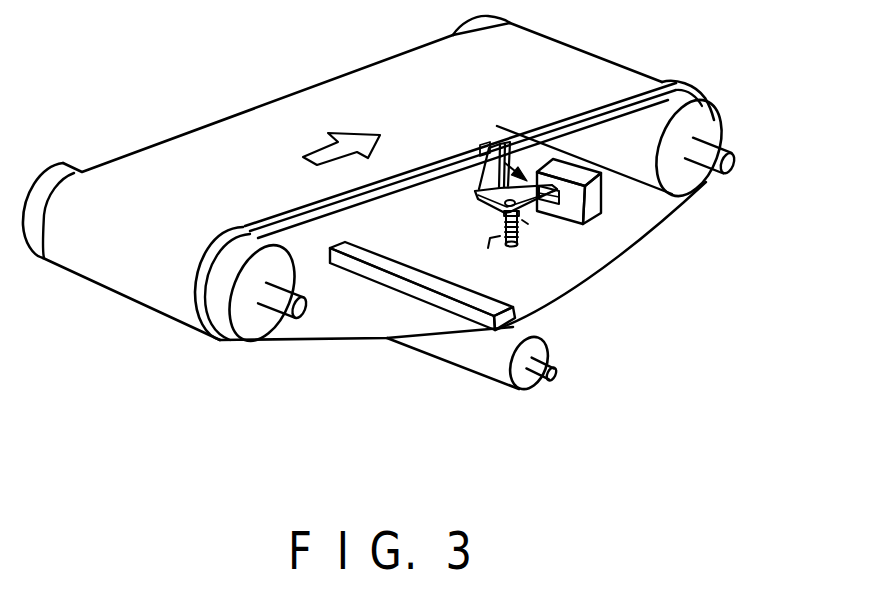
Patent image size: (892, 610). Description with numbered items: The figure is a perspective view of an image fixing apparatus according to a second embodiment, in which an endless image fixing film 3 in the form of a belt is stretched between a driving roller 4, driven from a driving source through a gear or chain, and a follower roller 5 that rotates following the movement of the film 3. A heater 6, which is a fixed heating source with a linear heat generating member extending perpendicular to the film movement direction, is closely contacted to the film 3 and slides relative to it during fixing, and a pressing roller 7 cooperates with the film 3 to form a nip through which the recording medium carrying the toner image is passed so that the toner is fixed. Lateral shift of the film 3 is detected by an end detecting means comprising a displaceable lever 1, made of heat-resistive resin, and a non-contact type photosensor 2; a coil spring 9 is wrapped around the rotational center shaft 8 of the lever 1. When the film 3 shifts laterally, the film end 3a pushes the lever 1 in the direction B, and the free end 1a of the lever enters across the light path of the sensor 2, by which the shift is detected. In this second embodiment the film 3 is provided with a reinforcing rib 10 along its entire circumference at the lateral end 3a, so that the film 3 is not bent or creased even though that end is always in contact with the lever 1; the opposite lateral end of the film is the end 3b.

The lever 1 is at (488, 153).
The free end of the lever 1a is at (558, 197).
The photosensor 2 is at (593, 218).
The image fixing film 3 is at (263, 130).
The film end 3a is at (637, 101).
The belt far end 3b is at (153, 147).
The driving roller 4 is at (250, 327).
The follower roller 5 is at (703, 122).
The heater 6 is at (437, 281).
The pressing roller 7 is at (484, 364).
The rotational center shaft 8 is at (516, 246).
The coil spring 9 is at (530, 224).
The reinforcing rib 10 is at (423, 173).
The direction B is at (507, 165).